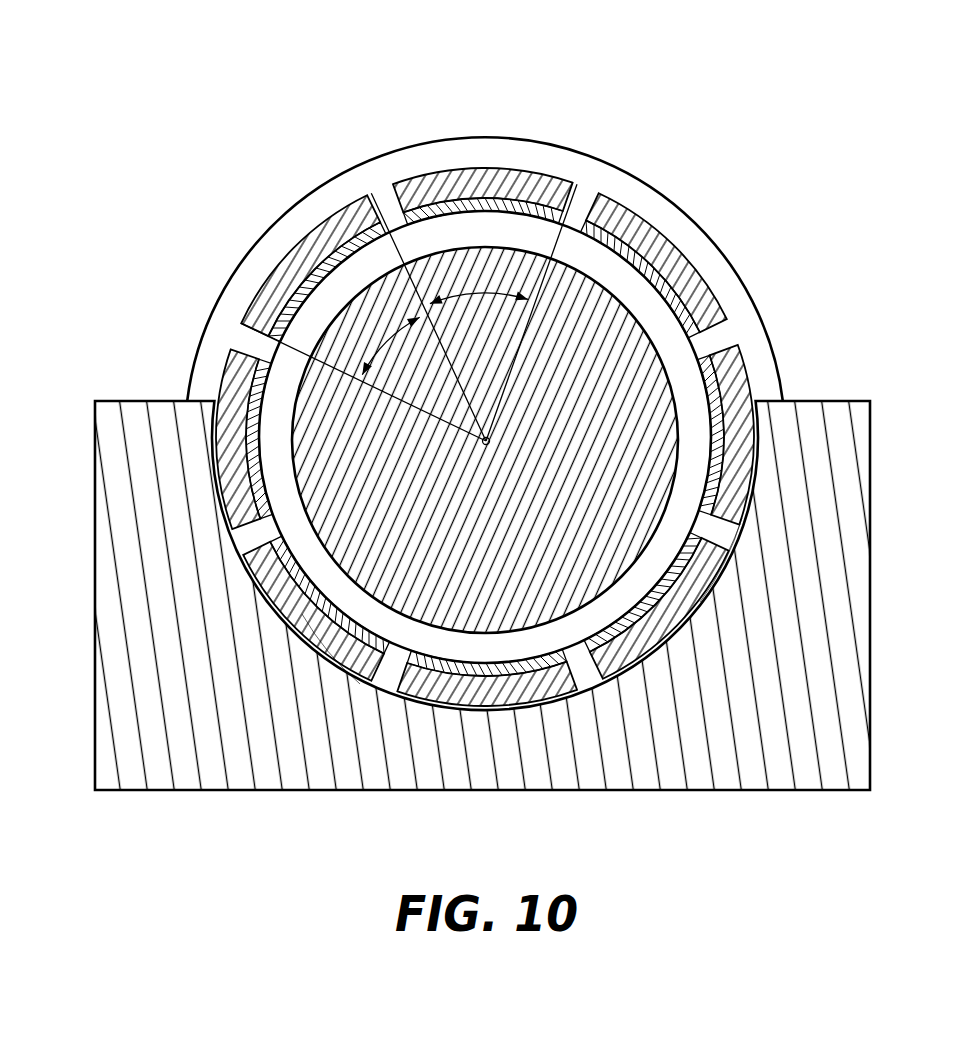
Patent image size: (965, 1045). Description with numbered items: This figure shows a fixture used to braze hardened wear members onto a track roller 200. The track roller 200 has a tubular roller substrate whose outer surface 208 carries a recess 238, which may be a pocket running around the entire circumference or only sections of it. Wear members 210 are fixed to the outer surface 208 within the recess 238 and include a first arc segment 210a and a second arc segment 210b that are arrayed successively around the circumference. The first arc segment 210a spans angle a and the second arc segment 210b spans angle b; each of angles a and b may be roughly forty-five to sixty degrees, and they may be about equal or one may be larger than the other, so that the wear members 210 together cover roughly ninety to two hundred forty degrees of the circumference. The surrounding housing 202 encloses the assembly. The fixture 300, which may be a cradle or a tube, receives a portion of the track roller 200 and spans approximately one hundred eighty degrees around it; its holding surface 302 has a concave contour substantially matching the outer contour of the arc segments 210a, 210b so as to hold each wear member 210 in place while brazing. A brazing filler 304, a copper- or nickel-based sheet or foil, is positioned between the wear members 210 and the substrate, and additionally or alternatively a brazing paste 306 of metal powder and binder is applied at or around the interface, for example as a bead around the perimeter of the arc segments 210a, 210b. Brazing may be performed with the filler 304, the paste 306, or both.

The track roller 200 is at (596, 108).
The housing 202 is at (714, 268).
The outer surface 208 is at (578, 212).
The wear member 210 is at (364, 680).
The first arc segment 210a is at (347, 203).
The second arc segment 210b is at (500, 169).
The recess 238 is at (569, 203).
The fixture 300 is at (822, 668).
The holding surface 302 is at (721, 572).
The brazing filler 304 is at (734, 537).
The brazing paste 306 is at (334, 632).
The angle a is at (386, 346).
The angle b is at (501, 296).